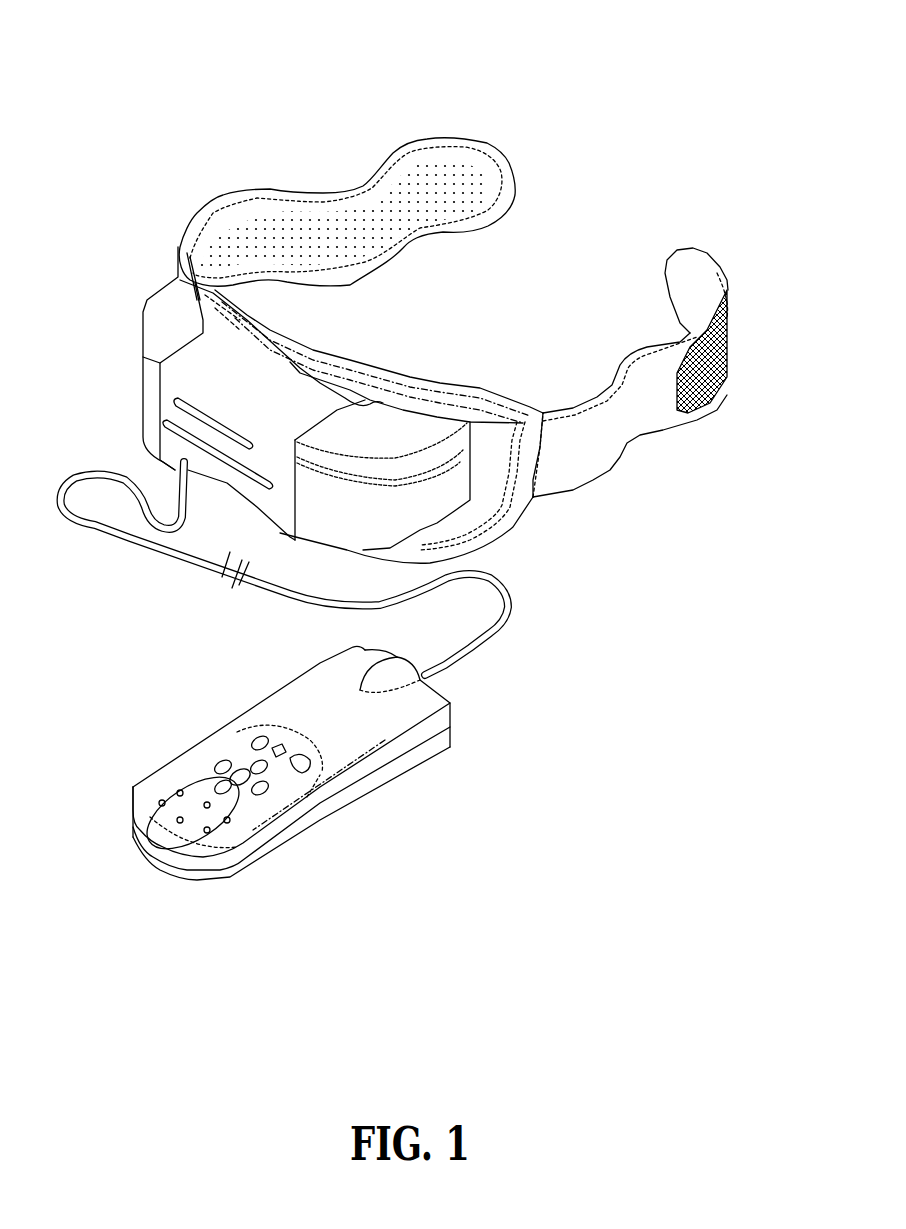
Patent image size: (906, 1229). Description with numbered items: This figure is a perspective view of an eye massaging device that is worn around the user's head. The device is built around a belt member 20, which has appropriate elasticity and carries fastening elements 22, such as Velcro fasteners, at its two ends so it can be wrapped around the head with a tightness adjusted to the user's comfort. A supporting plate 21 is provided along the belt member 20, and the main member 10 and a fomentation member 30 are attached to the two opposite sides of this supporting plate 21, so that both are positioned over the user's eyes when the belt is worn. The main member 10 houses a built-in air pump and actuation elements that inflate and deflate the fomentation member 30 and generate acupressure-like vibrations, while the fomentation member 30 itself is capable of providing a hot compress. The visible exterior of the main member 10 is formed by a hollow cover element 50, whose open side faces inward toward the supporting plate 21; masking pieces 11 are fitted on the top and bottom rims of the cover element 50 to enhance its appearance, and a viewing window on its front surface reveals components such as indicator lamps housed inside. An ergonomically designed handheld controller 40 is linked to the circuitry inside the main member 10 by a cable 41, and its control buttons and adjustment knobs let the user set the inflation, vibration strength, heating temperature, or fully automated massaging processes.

The main member 10 is at (137, 267).
The masking pieces 11 is at (273, 370).
The belt member 20 is at (587, 500).
The supporting plate 21 is at (527, 507).
The fastening elements 22 is at (443, 180).
The fomentation member 30 is at (407, 377).
The handheld controller 40 is at (380, 780).
The cable 41 is at (483, 637).
The cover element 50 is at (222, 500).